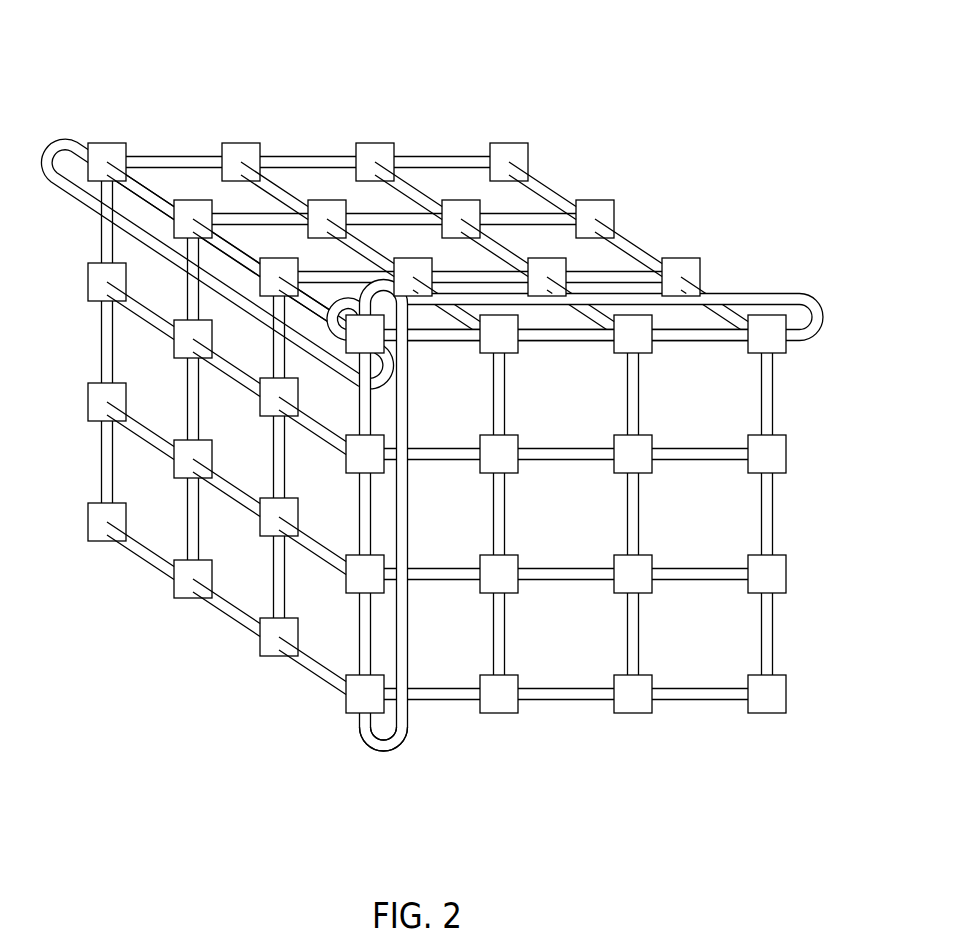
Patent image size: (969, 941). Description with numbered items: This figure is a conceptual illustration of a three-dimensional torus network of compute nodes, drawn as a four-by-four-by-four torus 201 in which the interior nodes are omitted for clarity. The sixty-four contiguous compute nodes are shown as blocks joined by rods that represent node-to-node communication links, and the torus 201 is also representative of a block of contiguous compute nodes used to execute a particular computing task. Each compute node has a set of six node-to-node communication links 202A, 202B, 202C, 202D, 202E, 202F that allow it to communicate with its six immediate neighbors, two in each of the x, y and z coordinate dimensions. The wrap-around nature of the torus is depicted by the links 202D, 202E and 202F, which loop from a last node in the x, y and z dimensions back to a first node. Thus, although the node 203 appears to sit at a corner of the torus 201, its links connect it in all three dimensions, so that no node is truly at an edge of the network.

The torus 201 is at (432, 404).
The node-to-node communication link 202A is at (430, 341).
The node-to-node communication link 202B is at (371, 414).
The node-to-node communication link 202C is at (340, 298).
The node-to-node communication link 202D is at (786, 293).
The node-to-node communication link 202E is at (386, 752).
The node-to-node communication link 202F is at (50, 140).
The node 203 is at (346, 349).